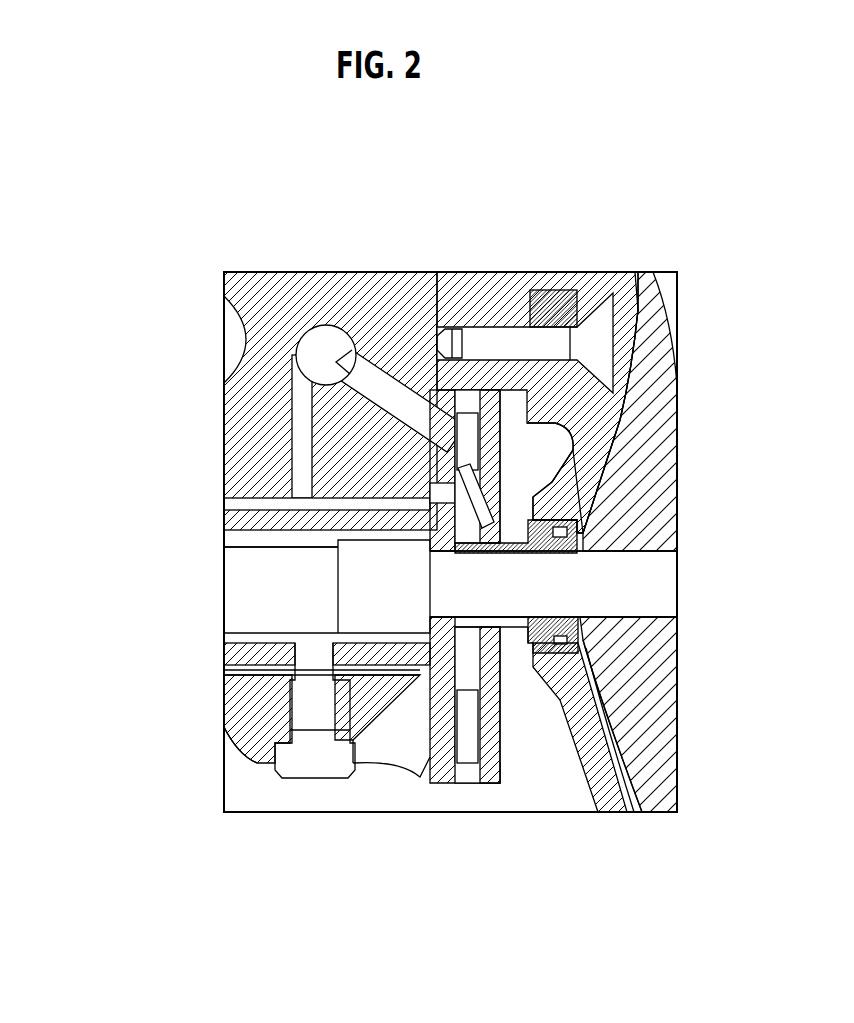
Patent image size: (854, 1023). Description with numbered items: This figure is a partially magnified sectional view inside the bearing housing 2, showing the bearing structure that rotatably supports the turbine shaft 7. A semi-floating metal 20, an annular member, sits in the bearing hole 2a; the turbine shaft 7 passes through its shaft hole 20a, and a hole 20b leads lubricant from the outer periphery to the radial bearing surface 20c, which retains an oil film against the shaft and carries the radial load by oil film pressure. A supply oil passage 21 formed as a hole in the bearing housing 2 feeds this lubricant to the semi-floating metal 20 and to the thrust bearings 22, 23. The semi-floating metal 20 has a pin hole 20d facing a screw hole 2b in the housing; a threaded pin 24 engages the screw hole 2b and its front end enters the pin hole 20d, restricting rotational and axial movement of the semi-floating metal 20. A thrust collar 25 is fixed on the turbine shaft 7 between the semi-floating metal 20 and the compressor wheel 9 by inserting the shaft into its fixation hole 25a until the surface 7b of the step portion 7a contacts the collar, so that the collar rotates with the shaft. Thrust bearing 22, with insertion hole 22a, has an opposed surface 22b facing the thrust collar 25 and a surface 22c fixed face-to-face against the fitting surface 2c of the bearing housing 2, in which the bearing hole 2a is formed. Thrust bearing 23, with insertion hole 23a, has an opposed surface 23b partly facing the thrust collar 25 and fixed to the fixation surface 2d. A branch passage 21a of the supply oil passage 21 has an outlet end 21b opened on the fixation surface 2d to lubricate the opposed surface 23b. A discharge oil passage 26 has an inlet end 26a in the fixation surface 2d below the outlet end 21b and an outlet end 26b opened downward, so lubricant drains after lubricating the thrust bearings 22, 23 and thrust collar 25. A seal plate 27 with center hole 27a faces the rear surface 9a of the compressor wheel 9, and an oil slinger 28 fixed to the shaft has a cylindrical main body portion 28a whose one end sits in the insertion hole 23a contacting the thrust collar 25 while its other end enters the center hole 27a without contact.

The bearing housing 2 is at (252, 771).
The bearing hole 2a is at (224, 670).
The screw hole 2b is at (292, 727).
The fitting surface 2c is at (428, 332).
The fixation surface 2d is at (590, 300).
The turbine shaft 7 is at (224, 633).
The step portion 7a is at (430, 576).
The surface 7b is at (470, 600).
The compressor wheel 9 is at (672, 300).
The rear surface 9a is at (638, 308).
The semi-floating metal 20 is at (242, 503).
The shaft hole 20a is at (295, 514).
The hole 20b is at (290, 497).
The radial bearing surface 20c is at (350, 545).
The pin hole 20d is at (317, 650).
The supply oil passage 21 is at (312, 340).
The branch passage 21a is at (363, 348).
The outlet end 21b is at (500, 430).
The thrust bearing 22 is at (435, 700).
The insertion hole 22a is at (430, 622).
The opposed surface 22b is at (437, 497).
The surface 22c is at (415, 470).
The thrust bearing 23 is at (515, 655).
The insertion hole 23a is at (590, 778).
The opposed surface 23b is at (500, 445).
The pin 24 is at (317, 780).
The thrust collar 25 is at (458, 745).
The fixation hole 25a is at (338, 573).
The discharge oil passage 26 is at (405, 753).
The inlet end 26a is at (470, 765).
The outlet end 26b is at (388, 763).
The seal plate 27 is at (628, 790).
The center hole 27a is at (660, 788).
The oil slinger 28 is at (577, 537).
The main body portion 28a is at (577, 492).